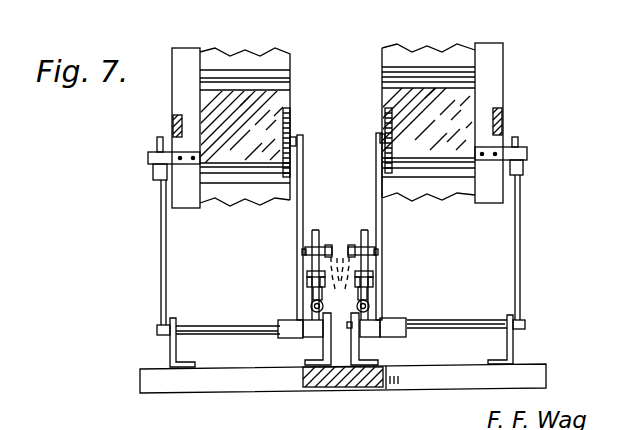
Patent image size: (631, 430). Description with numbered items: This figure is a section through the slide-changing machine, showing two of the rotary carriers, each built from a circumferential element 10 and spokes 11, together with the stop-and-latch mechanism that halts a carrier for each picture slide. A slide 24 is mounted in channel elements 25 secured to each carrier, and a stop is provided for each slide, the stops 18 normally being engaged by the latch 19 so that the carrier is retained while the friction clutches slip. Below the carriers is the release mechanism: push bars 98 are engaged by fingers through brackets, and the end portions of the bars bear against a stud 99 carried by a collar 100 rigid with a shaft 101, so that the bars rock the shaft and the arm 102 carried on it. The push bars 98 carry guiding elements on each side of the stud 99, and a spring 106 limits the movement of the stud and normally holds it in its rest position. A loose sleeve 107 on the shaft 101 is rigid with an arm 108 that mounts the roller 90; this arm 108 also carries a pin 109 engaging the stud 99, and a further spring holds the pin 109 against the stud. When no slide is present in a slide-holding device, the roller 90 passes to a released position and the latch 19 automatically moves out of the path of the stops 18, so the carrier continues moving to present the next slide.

The circumferential element 10 is at (190, 53).
The spokes 11 is at (172, 119).
The stops 18 is at (528, 148).
The latch 19 is at (524, 166).
The slide 24 is at (410, 95).
The channel elements 25 is at (456, 83).
The roller 90 is at (387, 118).
The push bars 98 is at (307, 282).
The stud 99 is at (317, 227).
The collar 100 is at (315, 340).
The shaft 101 is at (210, 325).
The arm 102 is at (161, 231).
The spring 106 is at (370, 303).
The loose sleeve 107 is at (392, 340).
The arm 108 is at (383, 233).
The pin 109 is at (333, 244).